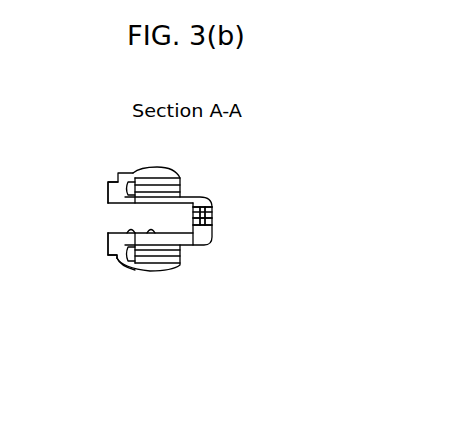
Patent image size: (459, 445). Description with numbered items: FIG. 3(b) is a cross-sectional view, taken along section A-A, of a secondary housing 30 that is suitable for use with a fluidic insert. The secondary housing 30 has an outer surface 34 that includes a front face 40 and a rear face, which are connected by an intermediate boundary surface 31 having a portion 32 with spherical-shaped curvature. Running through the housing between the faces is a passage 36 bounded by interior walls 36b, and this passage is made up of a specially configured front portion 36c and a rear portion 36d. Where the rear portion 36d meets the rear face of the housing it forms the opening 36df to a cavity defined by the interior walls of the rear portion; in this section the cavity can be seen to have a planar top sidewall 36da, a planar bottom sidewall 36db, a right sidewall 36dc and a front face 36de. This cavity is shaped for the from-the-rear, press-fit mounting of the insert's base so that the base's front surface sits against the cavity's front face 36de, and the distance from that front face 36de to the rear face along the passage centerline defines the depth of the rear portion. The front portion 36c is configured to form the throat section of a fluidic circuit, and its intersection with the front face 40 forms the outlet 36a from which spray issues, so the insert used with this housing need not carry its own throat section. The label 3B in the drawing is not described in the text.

The secondary housing 30 is at (102, 159).
The intermediate boundary surface 31 is at (204, 202).
The portion with spherical-shaped curvature 32 is at (148, 275).
The outer surface 34 is at (193, 196).
The passage 36 is at (213, 213).
The outlet 36a is at (213, 217).
The front portion of passage 36c is at (213, 221).
The rear portion of passage 36d is at (105, 225).
The interior walls 36b is at (112, 256).
The planar top sidewall 36da is at (133, 197).
The planar bottom sidewall 36db is at (135, 273).
The right sidewall of cavity 36dc is at (194, 237).
The front face of cavity 36de is at (213, 210).
The opening 36df is at (112, 215).
The front face 40 is at (215, 239).
The lower body left edge 3B is at (106, 238).